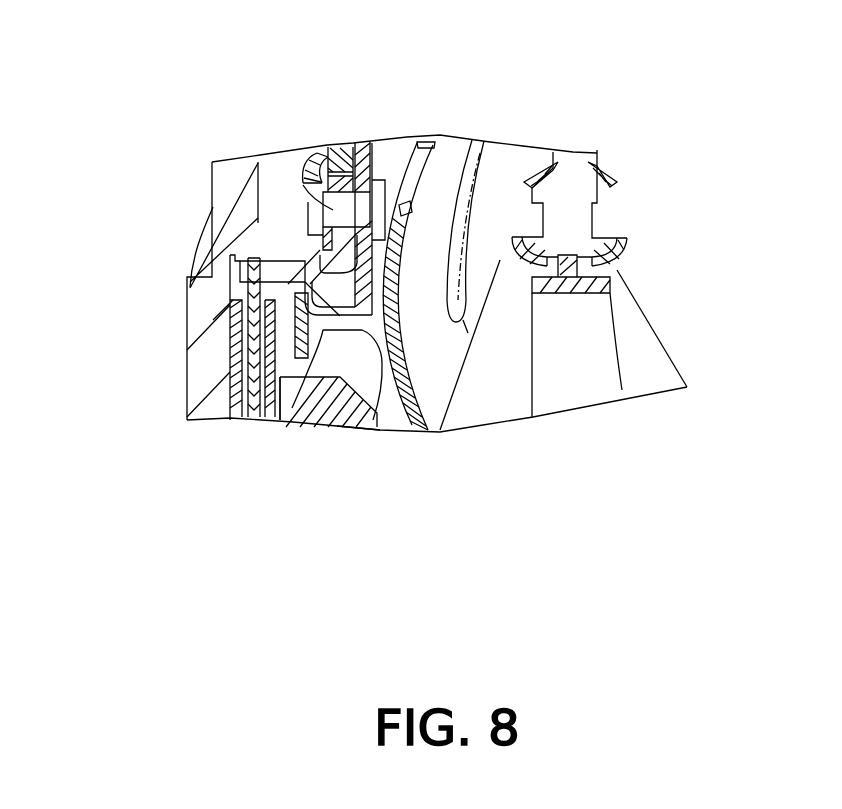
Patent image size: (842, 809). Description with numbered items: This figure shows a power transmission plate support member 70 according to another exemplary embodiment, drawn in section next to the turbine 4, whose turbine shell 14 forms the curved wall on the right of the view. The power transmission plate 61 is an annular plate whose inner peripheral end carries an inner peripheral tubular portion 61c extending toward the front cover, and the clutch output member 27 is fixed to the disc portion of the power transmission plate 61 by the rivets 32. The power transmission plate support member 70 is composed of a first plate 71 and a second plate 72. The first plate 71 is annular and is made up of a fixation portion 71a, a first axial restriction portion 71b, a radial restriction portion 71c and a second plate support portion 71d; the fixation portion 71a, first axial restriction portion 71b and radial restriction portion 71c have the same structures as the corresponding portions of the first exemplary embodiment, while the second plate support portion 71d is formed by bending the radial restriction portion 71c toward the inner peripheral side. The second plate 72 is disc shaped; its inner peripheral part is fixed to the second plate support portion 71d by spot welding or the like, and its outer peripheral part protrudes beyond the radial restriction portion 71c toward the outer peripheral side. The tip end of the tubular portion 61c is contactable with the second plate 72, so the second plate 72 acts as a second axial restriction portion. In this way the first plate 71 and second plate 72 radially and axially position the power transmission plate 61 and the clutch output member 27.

The turbine 4 is at (528, 139).
The turbine shell 14 is at (421, 142).
The clutch output member 27 is at (281, 265).
The rivets 32 is at (306, 152).
The power transmission plate 61 is at (355, 172).
The inner peripheral tubular portion 61c is at (305, 277).
The power transmission plate support member 70 is at (407, 343).
The first plate 71 is at (361, 377).
The fixation portion 71a is at (367, 430).
The first axial restriction portion 71b is at (378, 277).
The radial restriction portion 71c is at (297, 420).
The second plate support portion 71d is at (243, 420).
The second plate 72 is at (298, 322).